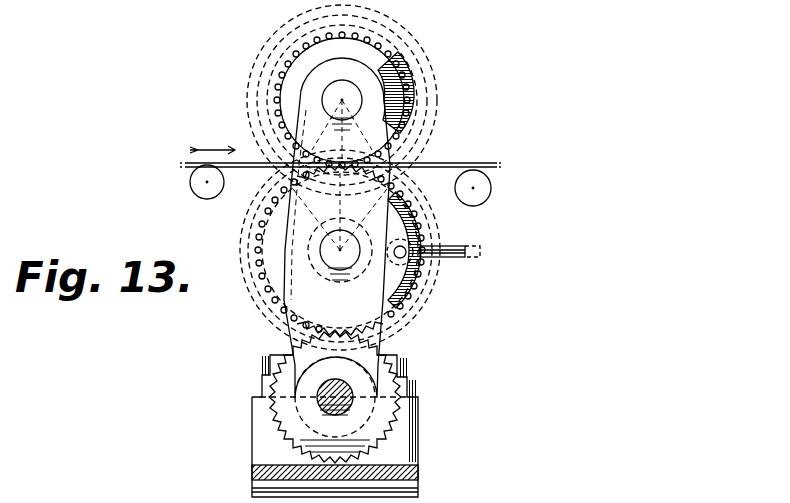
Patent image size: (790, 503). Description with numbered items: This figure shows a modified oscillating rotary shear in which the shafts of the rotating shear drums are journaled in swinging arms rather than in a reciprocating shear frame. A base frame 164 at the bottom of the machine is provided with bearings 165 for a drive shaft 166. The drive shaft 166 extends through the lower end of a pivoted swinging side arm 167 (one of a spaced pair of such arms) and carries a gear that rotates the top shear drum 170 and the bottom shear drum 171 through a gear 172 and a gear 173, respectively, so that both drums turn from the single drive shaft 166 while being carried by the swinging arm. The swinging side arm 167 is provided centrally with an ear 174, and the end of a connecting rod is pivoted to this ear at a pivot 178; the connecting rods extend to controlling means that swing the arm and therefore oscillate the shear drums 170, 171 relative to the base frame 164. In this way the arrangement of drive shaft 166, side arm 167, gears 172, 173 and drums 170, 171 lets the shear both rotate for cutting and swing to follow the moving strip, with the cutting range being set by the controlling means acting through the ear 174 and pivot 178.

The base frame 164 is at (418, 478).
The bearings 165 is at (375, 358).
The drive shaft 166 is at (317, 405).
The swinging side arm 167 is at (290, 306).
The top shear drum 170 is at (298, 57).
The bottom shear drum 171 is at (262, 222).
The gear 172 is at (403, 82).
The gear 173 is at (420, 268).
The ear 174 is at (461, 234).
The pivot 178 is at (394, 254).